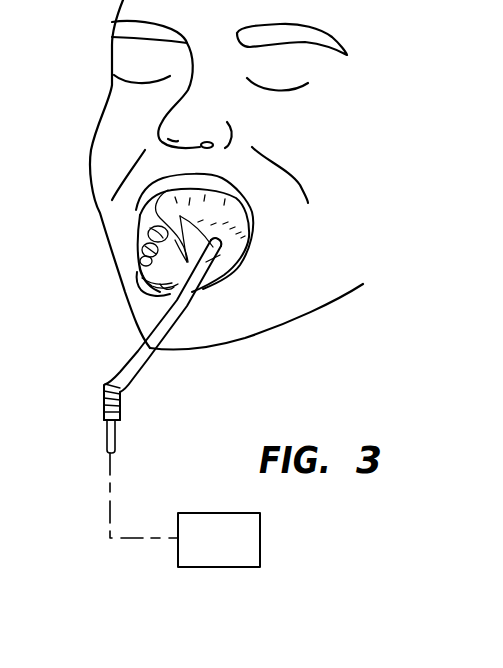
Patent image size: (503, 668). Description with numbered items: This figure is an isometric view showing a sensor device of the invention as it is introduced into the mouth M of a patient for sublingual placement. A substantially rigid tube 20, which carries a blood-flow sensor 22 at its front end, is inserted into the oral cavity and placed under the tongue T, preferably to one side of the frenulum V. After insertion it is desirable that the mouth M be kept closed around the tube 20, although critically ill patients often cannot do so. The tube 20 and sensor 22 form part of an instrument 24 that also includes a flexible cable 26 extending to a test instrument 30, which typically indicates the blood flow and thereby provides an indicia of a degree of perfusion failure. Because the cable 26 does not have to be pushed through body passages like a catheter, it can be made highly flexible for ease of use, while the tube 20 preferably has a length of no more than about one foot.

The mouth M is at (143, 218).
The tongue T is at (140, 234).
The frenulum V is at (150, 284).
The tube 20 is at (148, 356).
The blood-flow sensor 22 is at (224, 256).
The instrument 24 is at (95, 352).
The flexible cable 26 is at (117, 433).
The test instrument 30 is at (260, 540).